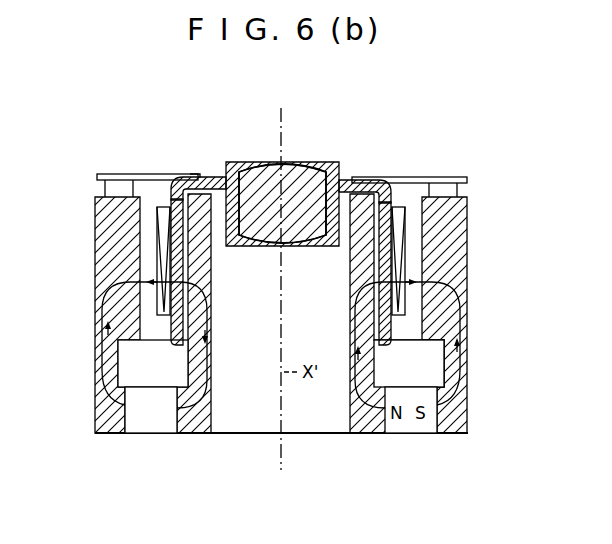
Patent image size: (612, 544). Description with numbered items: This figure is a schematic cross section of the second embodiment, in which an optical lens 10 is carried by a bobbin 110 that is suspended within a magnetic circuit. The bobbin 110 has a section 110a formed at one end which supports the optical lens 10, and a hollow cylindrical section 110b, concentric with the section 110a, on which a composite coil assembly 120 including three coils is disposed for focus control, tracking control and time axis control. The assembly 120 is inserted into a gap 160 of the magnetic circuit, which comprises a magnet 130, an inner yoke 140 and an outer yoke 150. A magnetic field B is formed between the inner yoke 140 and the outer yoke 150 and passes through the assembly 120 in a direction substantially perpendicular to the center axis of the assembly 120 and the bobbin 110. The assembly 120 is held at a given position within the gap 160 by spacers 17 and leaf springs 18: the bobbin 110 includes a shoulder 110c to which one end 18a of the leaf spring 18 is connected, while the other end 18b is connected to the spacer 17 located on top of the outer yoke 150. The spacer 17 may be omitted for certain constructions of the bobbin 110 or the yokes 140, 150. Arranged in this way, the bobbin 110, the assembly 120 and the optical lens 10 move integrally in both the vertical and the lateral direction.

The optical lens 10 is at (266, 167).
The bobbin 110 is at (281, 233).
The section of the bobbin 110a is at (339, 165).
The cylindrical section of the bobbin 110b is at (174, 270).
The shoulder 110c is at (218, 177).
The spacer 17 is at (457, 188).
The leaf spring 18 is at (409, 177).
The one end of the leaf spring 18a is at (198, 173).
The other end of the leaf spring 18b is at (120, 174).
The composite coil assembly 120 is at (405, 310).
The magnet 130 is at (150, 433).
The inner yoke 140 is at (211, 338).
The outer yoke 150 is at (100, 297).
The gap 160 is at (147, 245).
The magnetic field B is at (368, 283).